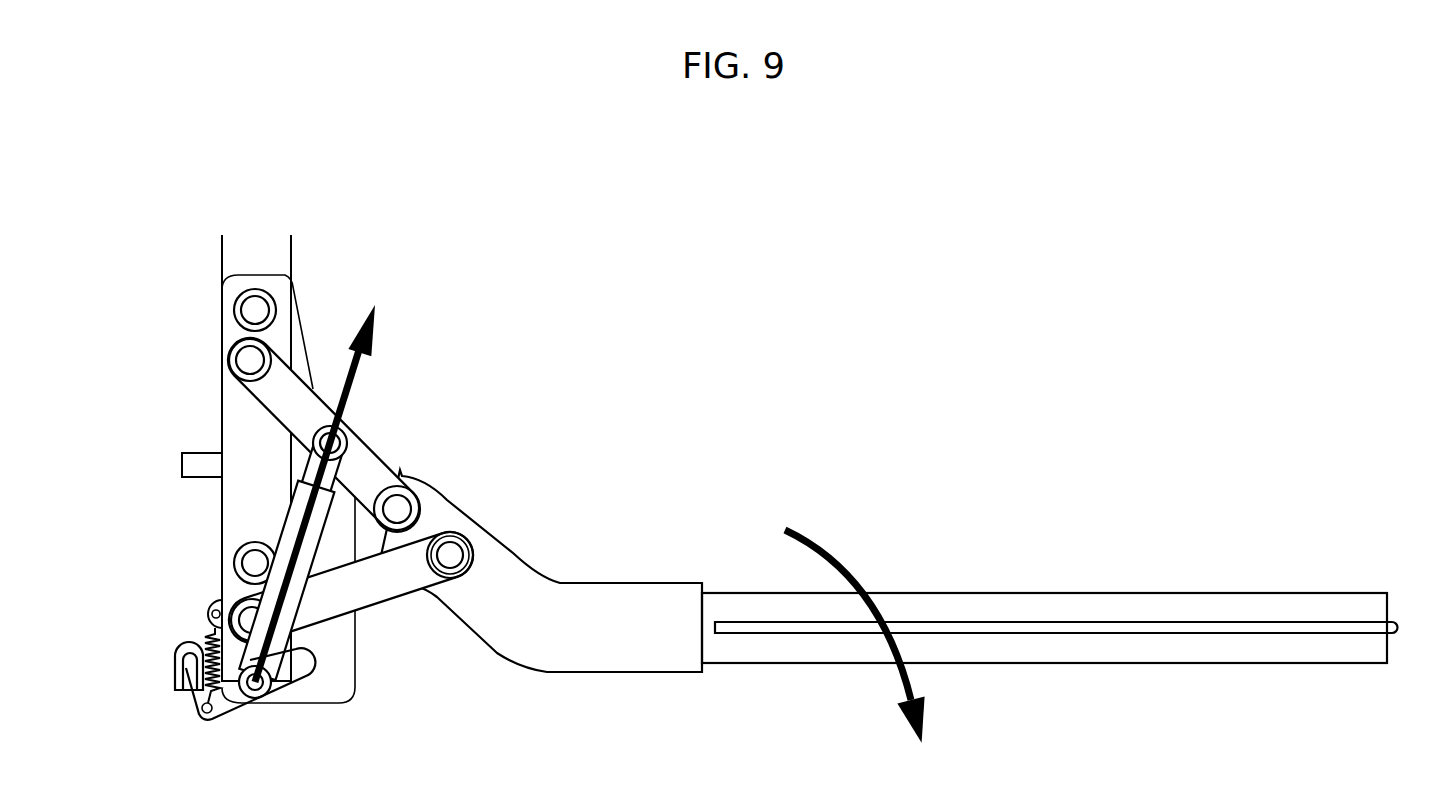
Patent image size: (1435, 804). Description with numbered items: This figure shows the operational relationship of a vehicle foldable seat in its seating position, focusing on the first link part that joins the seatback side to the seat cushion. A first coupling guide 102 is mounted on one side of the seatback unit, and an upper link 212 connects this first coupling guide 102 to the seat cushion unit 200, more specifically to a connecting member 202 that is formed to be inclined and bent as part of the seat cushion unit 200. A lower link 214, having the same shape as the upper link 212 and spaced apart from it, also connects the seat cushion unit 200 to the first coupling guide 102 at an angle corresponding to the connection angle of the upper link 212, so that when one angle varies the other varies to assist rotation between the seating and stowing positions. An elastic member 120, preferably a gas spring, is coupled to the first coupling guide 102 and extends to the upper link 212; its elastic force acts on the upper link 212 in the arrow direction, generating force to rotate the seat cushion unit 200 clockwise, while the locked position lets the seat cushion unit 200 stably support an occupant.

The first coupling guide 102 is at (245, 431).
The elastic member 120 is at (285, 538).
The seat cushion unit 200 is at (992, 608).
The connecting member 202 is at (632, 600).
The upper link 212 is at (373, 460).
The lower link 214 is at (378, 587).